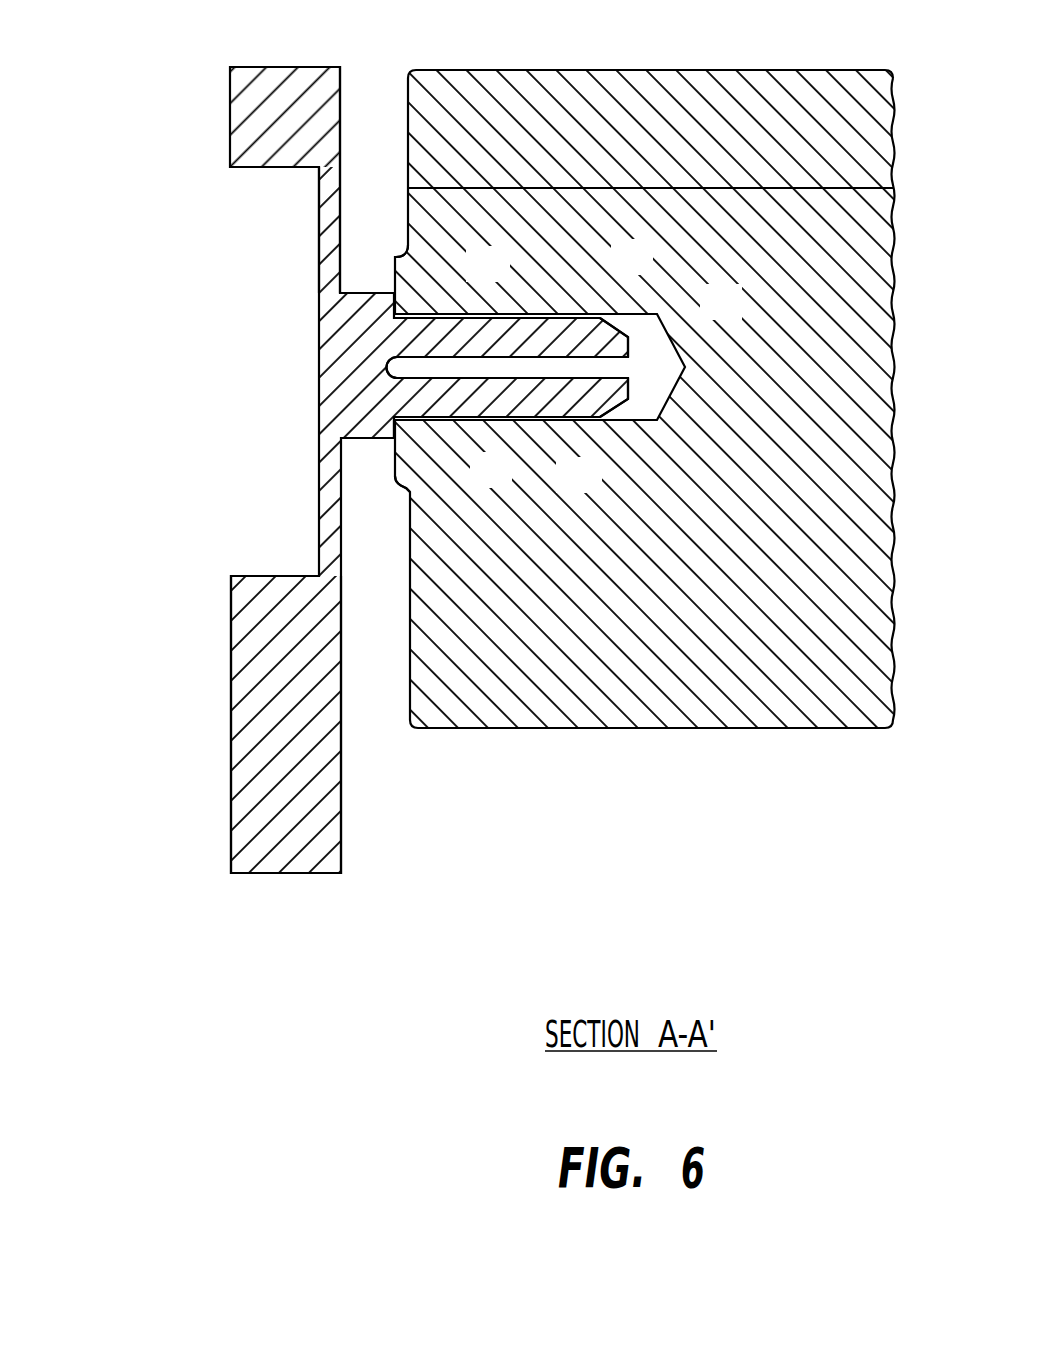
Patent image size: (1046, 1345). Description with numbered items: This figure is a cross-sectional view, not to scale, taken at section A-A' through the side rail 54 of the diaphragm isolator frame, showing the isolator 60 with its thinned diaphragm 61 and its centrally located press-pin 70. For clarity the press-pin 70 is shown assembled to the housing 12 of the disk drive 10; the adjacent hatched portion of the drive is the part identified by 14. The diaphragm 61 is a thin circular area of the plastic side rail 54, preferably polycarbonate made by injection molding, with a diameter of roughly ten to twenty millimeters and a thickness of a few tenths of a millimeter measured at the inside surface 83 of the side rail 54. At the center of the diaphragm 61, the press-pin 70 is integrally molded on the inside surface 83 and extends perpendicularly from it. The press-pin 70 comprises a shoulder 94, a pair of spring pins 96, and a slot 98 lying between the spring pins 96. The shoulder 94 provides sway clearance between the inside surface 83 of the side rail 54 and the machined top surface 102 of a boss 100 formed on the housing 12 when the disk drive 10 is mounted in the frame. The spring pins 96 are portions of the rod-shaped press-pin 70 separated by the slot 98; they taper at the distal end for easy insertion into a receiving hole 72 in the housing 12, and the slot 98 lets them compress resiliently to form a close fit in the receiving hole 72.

The disk drive 10 is at (736, 842).
The housing 12 is at (800, 717).
The cover 14 is at (665, 82).
The side rail 54 is at (178, 730).
The isolator 60 is at (280, 385).
The diaphragm 61 is at (318, 205).
The press-pin 70 is at (624, 313).
The receiving hole 72 is at (674, 338).
The inside surface 83 is at (343, 838).
The shoulder 94 is at (373, 440).
The spring pins 96 is at (482, 315).
The slot 98 is at (551, 368).
The boss 100 is at (402, 253).
The top surface 102 is at (395, 266).